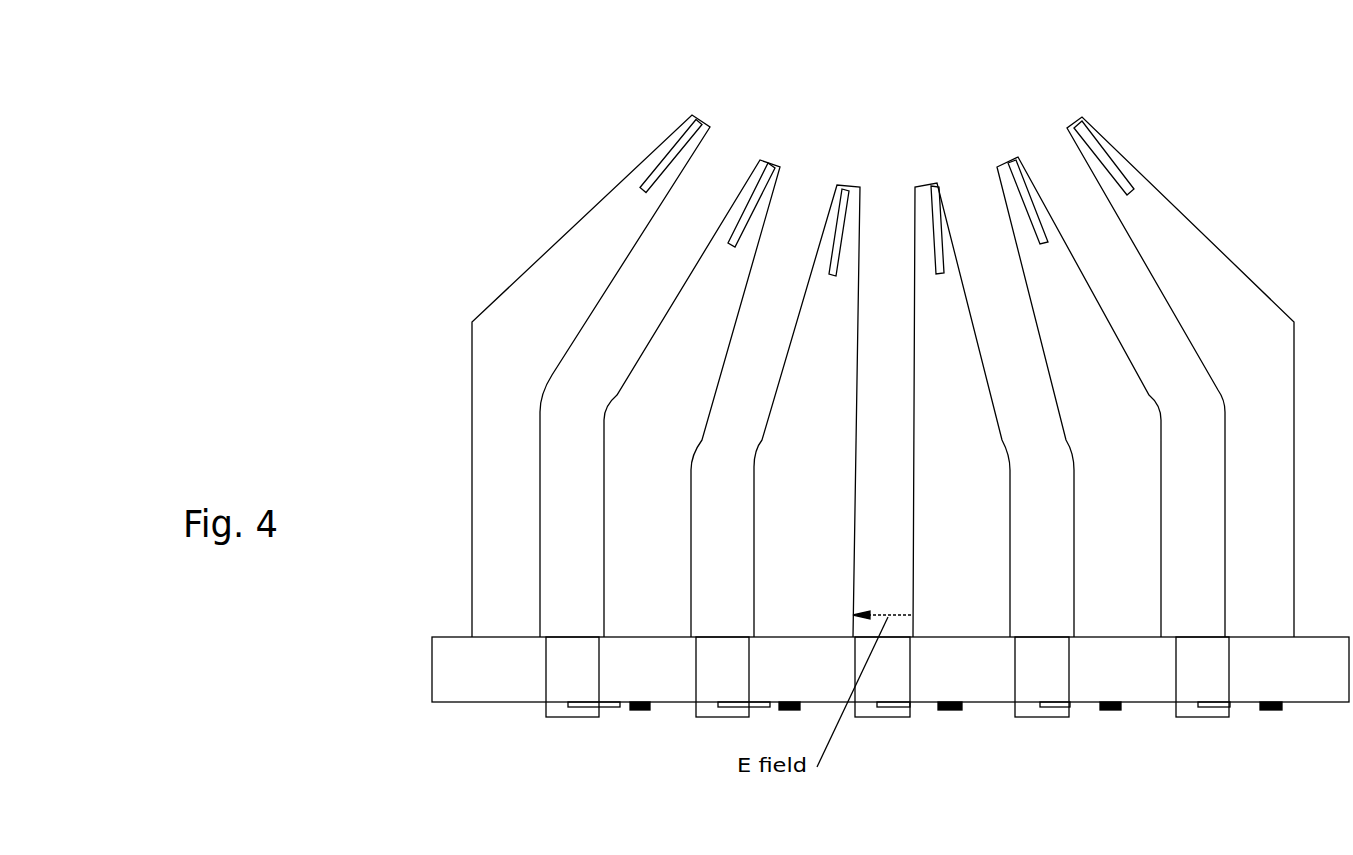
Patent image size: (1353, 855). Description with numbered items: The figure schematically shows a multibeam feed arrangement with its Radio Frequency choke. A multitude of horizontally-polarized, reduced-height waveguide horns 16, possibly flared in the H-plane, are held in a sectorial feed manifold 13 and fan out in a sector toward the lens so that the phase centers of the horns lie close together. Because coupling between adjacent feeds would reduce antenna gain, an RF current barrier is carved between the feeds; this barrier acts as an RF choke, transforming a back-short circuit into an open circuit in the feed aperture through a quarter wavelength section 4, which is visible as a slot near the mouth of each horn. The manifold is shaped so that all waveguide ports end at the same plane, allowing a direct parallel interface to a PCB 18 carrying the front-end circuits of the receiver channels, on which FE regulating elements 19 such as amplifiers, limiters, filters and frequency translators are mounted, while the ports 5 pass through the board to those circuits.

The quarter wavelength section 4 is at (1075, 128).
The feedthrough connector 5 is at (1183, 712).
The sectorial feed manifold 13 is at (1142, 334).
The horizontally-polarized waveguide horn 16 is at (982, 197).
The front-end circuit PCB 18 is at (1336, 695).
The FE regulating elements 19 is at (1113, 709).